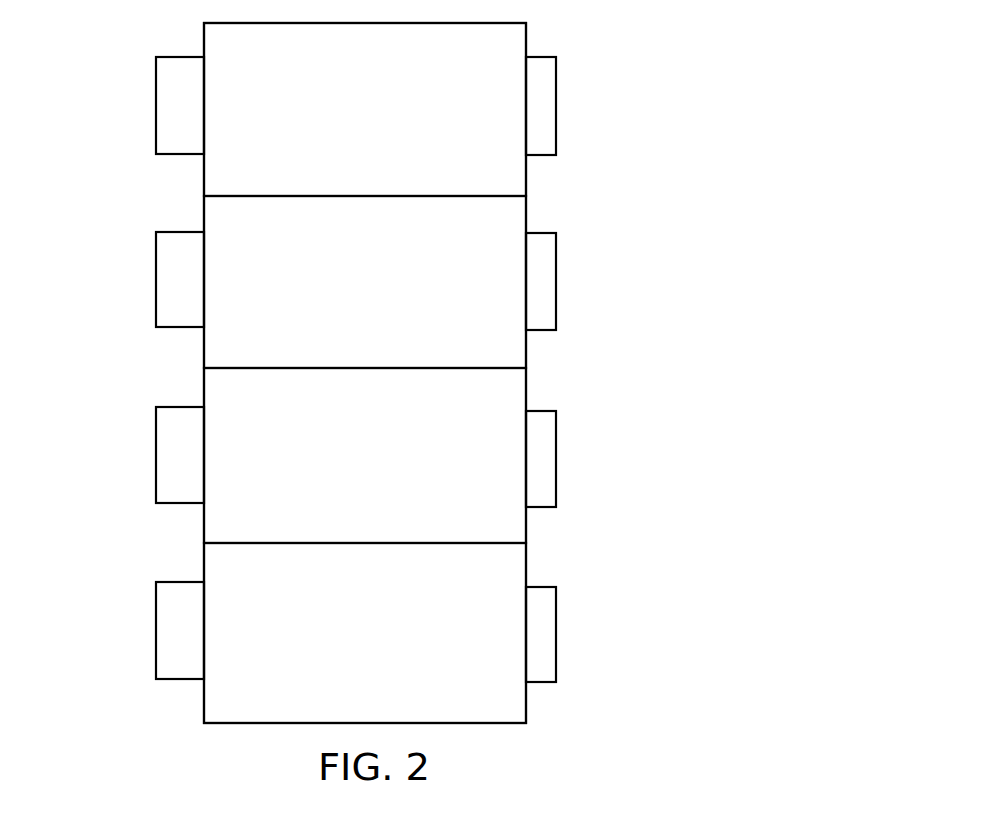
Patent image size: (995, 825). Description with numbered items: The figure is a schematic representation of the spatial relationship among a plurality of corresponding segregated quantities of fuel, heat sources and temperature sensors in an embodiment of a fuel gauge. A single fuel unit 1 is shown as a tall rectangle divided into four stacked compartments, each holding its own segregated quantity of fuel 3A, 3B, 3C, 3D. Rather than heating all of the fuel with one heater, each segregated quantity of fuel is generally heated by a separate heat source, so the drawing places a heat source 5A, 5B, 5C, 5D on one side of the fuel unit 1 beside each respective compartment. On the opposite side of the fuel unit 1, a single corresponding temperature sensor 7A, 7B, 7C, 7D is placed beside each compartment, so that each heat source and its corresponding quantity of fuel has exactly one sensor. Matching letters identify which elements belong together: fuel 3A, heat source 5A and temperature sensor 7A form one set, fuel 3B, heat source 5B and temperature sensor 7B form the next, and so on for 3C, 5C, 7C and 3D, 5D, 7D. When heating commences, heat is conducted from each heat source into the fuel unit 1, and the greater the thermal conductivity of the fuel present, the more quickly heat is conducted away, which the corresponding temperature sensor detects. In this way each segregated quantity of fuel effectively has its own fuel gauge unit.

The fuel unit 1 is at (526, 30).
The segregated quantity of fuel 3A is at (392, 118).
The segregated quantity of fuel 3B is at (392, 290).
The segregated quantity of fuel 3C is at (392, 470).
The segregated quantity of fuel 3D is at (392, 642).
The heat source 5A is at (156, 122).
The heat source 5B is at (156, 295).
The heat source 5C is at (156, 468).
The heat source 5D is at (156, 643).
The temperature sensor 7A is at (556, 138).
The temperature sensor 7B is at (556, 312).
The temperature sensor 7C is at (556, 487).
The temperature sensor 7D is at (556, 665).